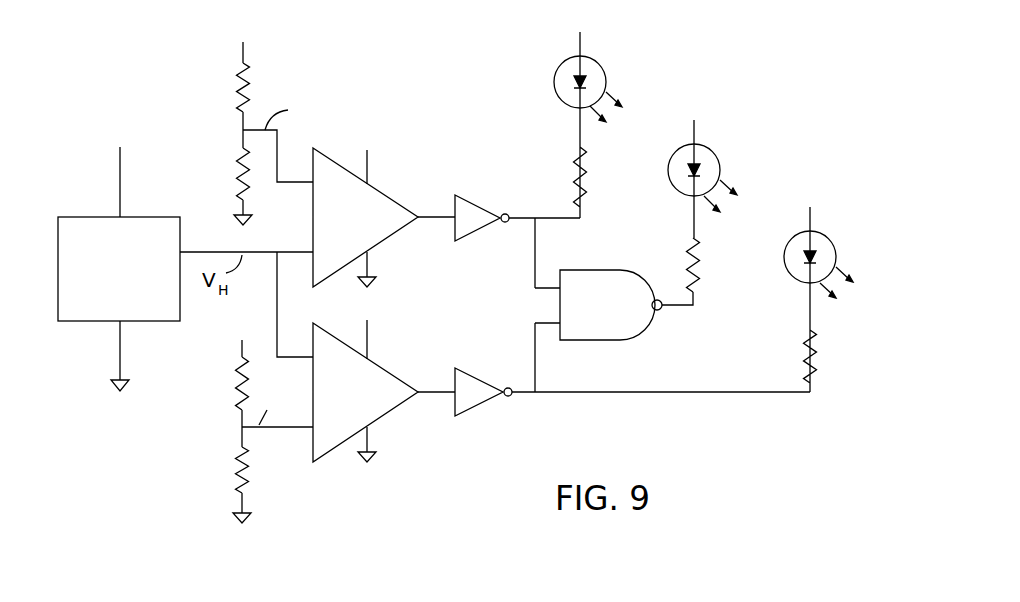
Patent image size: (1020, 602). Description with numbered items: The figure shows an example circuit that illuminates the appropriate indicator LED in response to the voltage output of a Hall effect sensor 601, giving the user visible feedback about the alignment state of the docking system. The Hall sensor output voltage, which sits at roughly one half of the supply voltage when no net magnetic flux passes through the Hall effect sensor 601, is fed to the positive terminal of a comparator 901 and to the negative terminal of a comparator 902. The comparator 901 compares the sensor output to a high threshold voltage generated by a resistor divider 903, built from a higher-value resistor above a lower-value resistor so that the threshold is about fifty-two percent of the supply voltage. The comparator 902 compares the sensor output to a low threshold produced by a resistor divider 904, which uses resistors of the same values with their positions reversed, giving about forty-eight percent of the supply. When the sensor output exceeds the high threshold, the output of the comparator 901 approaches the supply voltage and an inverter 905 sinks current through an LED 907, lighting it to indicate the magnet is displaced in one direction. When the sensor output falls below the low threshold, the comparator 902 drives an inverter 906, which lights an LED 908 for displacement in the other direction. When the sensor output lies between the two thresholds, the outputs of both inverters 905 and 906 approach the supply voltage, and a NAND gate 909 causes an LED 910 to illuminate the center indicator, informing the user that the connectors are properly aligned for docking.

The Hall effect sensor 601 is at (107, 320).
The comparator 901 is at (378, 190).
The comparator 902 is at (378, 360).
The resistor divider 903 is at (255, 63).
The resistor divider 904 is at (250, 492).
The inverter 905 is at (463, 195).
The inverter 906 is at (468, 408).
The LED 907 is at (560, 97).
The LED 908 is at (797, 280).
The NAND gate 909 is at (648, 330).
The LED 910 is at (689, 195).